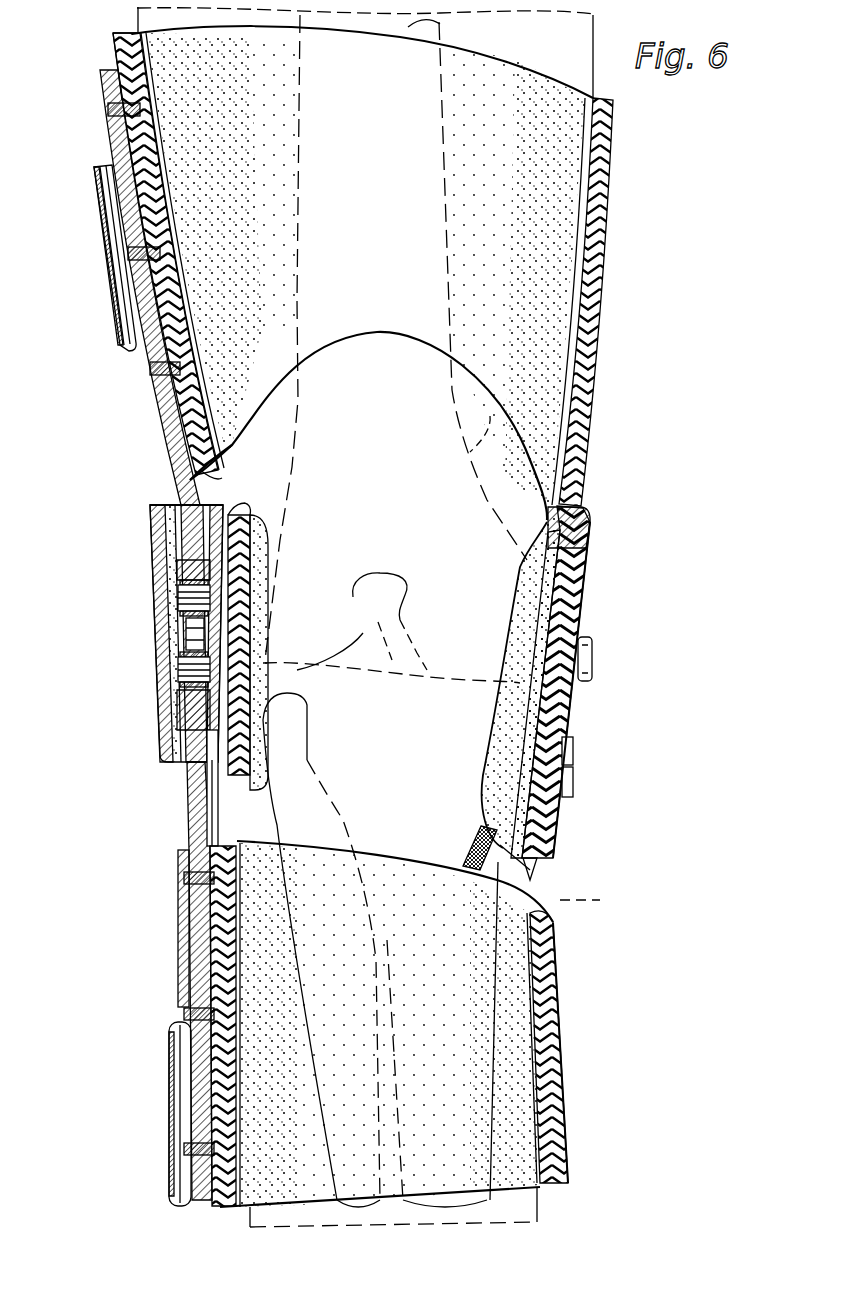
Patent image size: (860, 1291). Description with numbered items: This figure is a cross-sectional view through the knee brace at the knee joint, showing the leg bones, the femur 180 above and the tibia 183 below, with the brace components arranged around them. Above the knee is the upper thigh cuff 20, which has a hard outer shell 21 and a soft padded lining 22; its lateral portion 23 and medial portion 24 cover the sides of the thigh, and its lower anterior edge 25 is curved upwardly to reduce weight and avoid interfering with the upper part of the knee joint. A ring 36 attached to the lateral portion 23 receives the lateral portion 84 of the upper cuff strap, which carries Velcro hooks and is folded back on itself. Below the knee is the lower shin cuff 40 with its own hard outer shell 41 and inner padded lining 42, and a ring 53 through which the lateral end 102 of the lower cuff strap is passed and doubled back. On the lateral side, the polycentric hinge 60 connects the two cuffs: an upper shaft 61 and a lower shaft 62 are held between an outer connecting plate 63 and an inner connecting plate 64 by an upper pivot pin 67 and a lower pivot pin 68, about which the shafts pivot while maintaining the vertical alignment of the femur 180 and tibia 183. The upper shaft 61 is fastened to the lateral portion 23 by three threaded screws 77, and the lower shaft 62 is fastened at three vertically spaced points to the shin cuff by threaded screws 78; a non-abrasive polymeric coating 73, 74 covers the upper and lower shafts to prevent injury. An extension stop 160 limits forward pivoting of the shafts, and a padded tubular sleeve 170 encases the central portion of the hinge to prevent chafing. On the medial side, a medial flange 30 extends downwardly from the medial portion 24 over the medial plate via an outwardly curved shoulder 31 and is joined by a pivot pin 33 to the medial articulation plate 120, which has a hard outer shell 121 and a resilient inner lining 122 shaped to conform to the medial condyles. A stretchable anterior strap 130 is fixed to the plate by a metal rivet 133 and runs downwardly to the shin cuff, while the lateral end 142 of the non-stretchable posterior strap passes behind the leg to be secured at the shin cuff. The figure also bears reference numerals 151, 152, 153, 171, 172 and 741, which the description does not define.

The upper thigh cuff 20 is at (558, 72).
The hard outer shell 21 is at (178, 394).
The soft padded lining 22 is at (182, 413).
The lateral portion 23 is at (115, 52).
The medial portion 24 is at (602, 373).
The lower anterior edge 25 is at (379, 337).
The medial flange 30 is at (588, 562).
The outwardly curved shoulder 31 is at (582, 512).
The pivot pin 33 is at (592, 646).
The ring 36 is at (100, 168).
The lower shin cuff 40 is at (568, 1000).
The hard outer shell 41 is at (555, 942).
The inner padded lining 42 is at (553, 958).
The ring 53 is at (178, 1029).
The polycentric hinge 60 is at (168, 718).
The upper shaft 61 is at (189, 430).
The lower shaft 62 is at (192, 795).
The outer connecting plate 63 is at (172, 568).
The inner connecting plate 64 is at (168, 548).
The upper pivot pin 67 is at (176, 598).
The lower pivot pin 68 is at (176, 670).
The polymeric coating 73 is at (190, 450).
The polymeric coating 74 is at (205, 822).
The plate edge 741 is at (213, 820).
The threaded screws 77 is at (122, 106).
The threaded screws 78 is at (186, 878).
The lateral portion 84 is at (96, 197).
The lateral end 102 is at (169, 1062).
The medial articulation plate 120 is at (555, 842).
The hard outer shell 121 is at (566, 702).
The inner lining 122 is at (574, 746).
The stretchable anterior strap 130 is at (540, 864).
The metal rivet 133 is at (574, 782).
The lateral end 142 is at (180, 930).
The condyle pad layer 151 is at (252, 514).
The condyle pad top 152 is at (246, 507).
The condyle pad cover 153 is at (254, 542).
The extension stop 160 is at (176, 645).
The padded tubular sleeve 170 is at (155, 696).
The housing wall 171 is at (150, 511).
The housing top 172 is at (150, 506).
The femur 180 is at (480, 423).
The tibia 183 is at (601, 897).